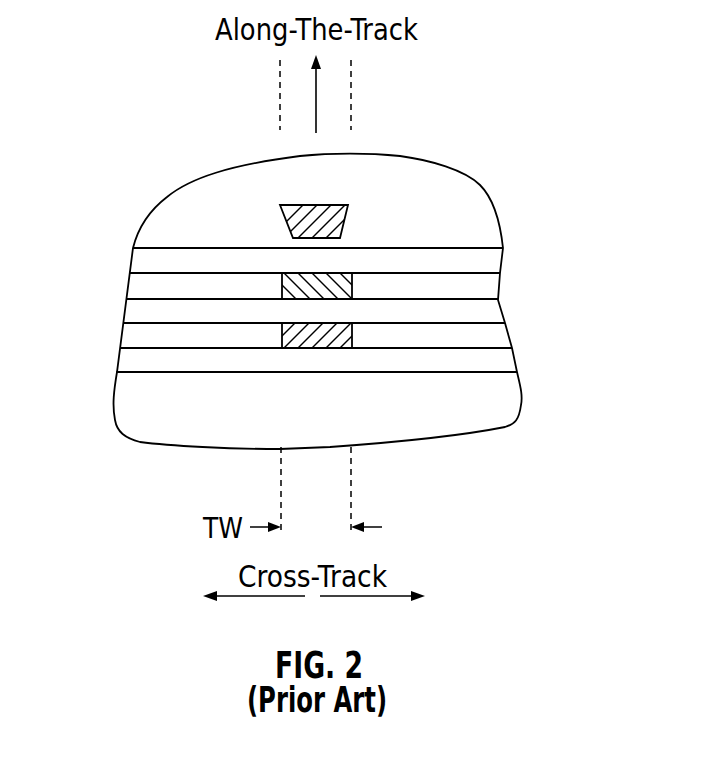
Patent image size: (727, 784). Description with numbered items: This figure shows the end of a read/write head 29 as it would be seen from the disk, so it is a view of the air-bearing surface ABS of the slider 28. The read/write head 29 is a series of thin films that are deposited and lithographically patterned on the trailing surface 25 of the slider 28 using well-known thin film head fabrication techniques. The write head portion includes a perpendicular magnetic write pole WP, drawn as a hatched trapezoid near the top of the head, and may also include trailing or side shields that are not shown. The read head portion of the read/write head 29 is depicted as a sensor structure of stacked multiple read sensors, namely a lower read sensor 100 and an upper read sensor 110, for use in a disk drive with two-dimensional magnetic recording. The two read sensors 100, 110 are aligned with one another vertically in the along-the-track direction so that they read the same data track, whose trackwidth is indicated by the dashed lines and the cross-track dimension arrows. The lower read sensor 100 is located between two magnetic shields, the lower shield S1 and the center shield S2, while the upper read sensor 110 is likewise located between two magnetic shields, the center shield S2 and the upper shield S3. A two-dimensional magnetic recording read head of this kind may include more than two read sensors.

The slider 28 is at (138, 430).
The read/write head 29 is at (72, 205).
The trailing surface 25 is at (157, 372).
The upper read sensor 110 is at (297, 277).
The lower read sensor 100 is at (340, 343).
The write pole WP is at (350, 218).
The air-bearing surface ABS is at (194, 190).
The lower shield S1 is at (500, 358).
The center shield S2 is at (490, 312).
The upper shield S3 is at (490, 260).